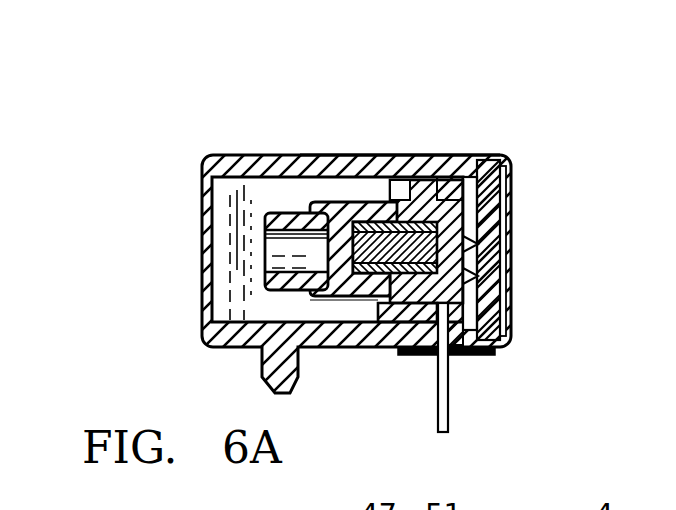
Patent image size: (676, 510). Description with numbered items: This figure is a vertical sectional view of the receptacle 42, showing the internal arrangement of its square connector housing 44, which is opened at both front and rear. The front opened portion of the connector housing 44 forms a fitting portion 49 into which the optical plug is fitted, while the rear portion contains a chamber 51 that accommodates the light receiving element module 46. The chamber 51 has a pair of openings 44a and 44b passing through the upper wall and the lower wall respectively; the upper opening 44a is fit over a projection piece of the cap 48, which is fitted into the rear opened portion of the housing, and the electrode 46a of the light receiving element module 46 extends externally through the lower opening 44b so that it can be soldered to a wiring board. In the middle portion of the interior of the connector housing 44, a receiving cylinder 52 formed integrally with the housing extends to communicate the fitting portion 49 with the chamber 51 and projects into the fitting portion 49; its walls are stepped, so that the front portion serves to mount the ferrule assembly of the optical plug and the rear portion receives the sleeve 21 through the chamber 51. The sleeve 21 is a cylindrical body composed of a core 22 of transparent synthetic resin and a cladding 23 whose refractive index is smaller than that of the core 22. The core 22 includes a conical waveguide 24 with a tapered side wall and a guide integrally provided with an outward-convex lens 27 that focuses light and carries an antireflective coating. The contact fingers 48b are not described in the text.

The sleeve 21 is at (275, 228).
The core 22 is at (347, 220).
The cladding 23 is at (377, 220).
The waveguide 24 is at (368, 343).
The lens 27 is at (280, 298).
The receptacle 42 is at (370, 262).
The connector housing 44 is at (237, 155).
The opening 44a is at (500, 147).
The opening 44b is at (462, 358).
The light receiving element module 46 is at (413, 197).
The electrode 46a is at (455, 415).
The cap 48 is at (510, 205).
The contact fingers 48b is at (463, 278).
The fitting portion 49 is at (245, 210).
The chamber 51 is at (455, 185).
The receiving cylinder 52 is at (266, 278).